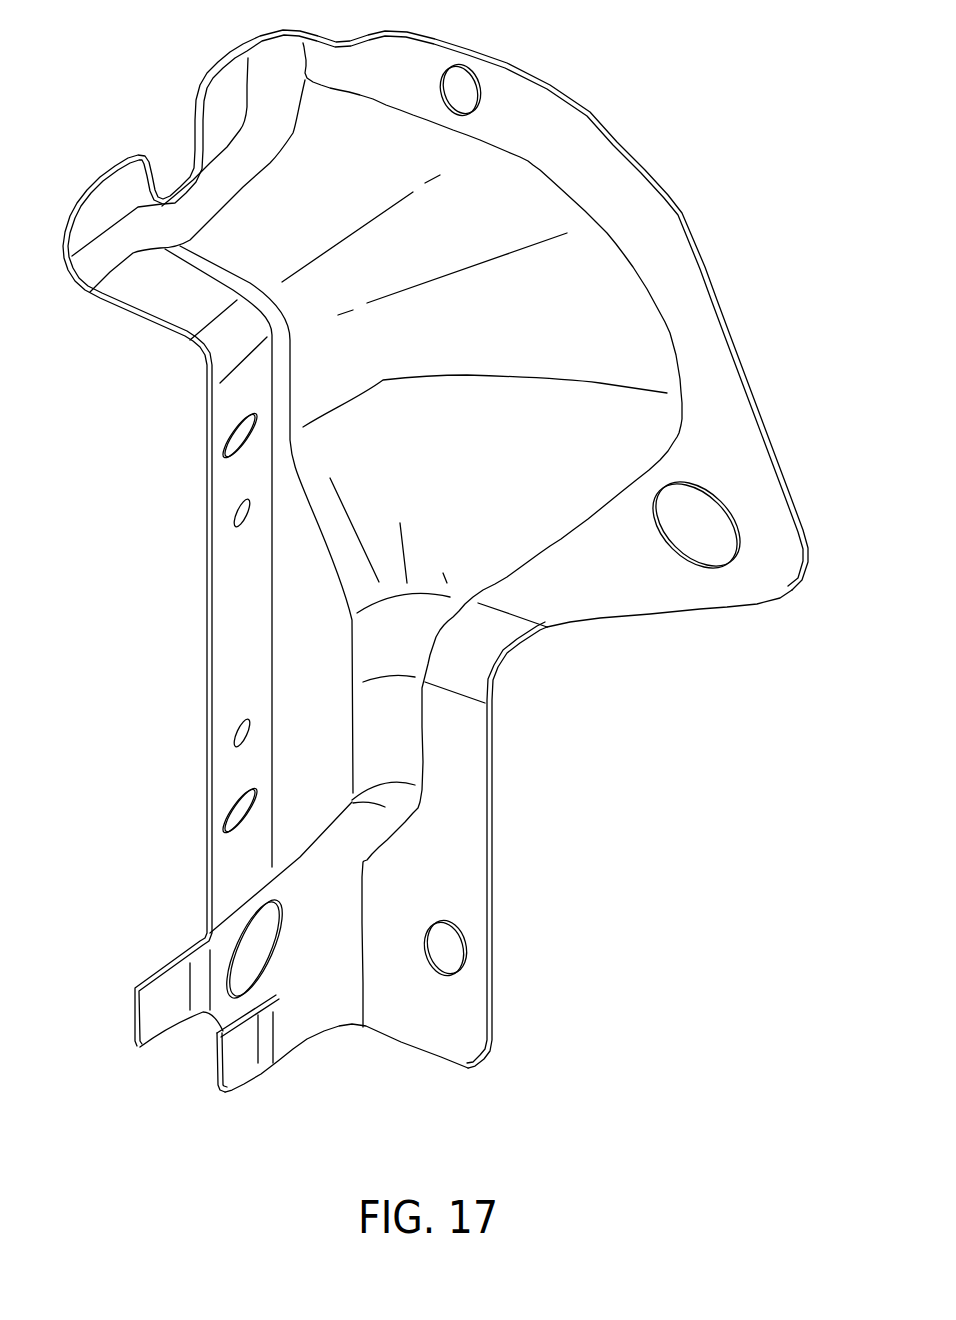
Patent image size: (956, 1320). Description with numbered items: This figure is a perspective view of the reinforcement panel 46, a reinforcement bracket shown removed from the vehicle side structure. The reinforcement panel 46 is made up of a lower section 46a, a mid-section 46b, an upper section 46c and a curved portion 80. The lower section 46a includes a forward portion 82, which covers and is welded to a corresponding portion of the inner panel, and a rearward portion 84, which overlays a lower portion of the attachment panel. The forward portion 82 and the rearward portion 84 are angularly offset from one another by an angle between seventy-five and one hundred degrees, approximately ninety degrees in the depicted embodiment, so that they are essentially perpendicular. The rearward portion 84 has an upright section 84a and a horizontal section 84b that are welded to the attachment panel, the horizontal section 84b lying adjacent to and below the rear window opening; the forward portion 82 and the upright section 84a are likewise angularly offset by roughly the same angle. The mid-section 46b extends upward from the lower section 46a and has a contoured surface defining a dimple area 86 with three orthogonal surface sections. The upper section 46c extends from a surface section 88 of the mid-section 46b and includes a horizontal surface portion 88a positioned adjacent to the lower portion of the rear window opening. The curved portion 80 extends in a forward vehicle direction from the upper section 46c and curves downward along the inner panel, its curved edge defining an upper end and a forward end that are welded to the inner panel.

The reinforcement panel 46 is at (590, 48).
The lower section 46a is at (460, 748).
The mid-section 46b is at (328, 445).
The upper section 46c is at (360, 150).
The curved portion 80 is at (630, 153).
The forward portion 82 is at (407, 1003).
The rearward portion 84 is at (240, 858).
The upright section 84a is at (240, 632).
The horizontal section 84b is at (160, 303).
The dimple area 86 is at (380, 581).
The surface section 88 is at (505, 202).
The horizontal surface portion 88a is at (246, 252).